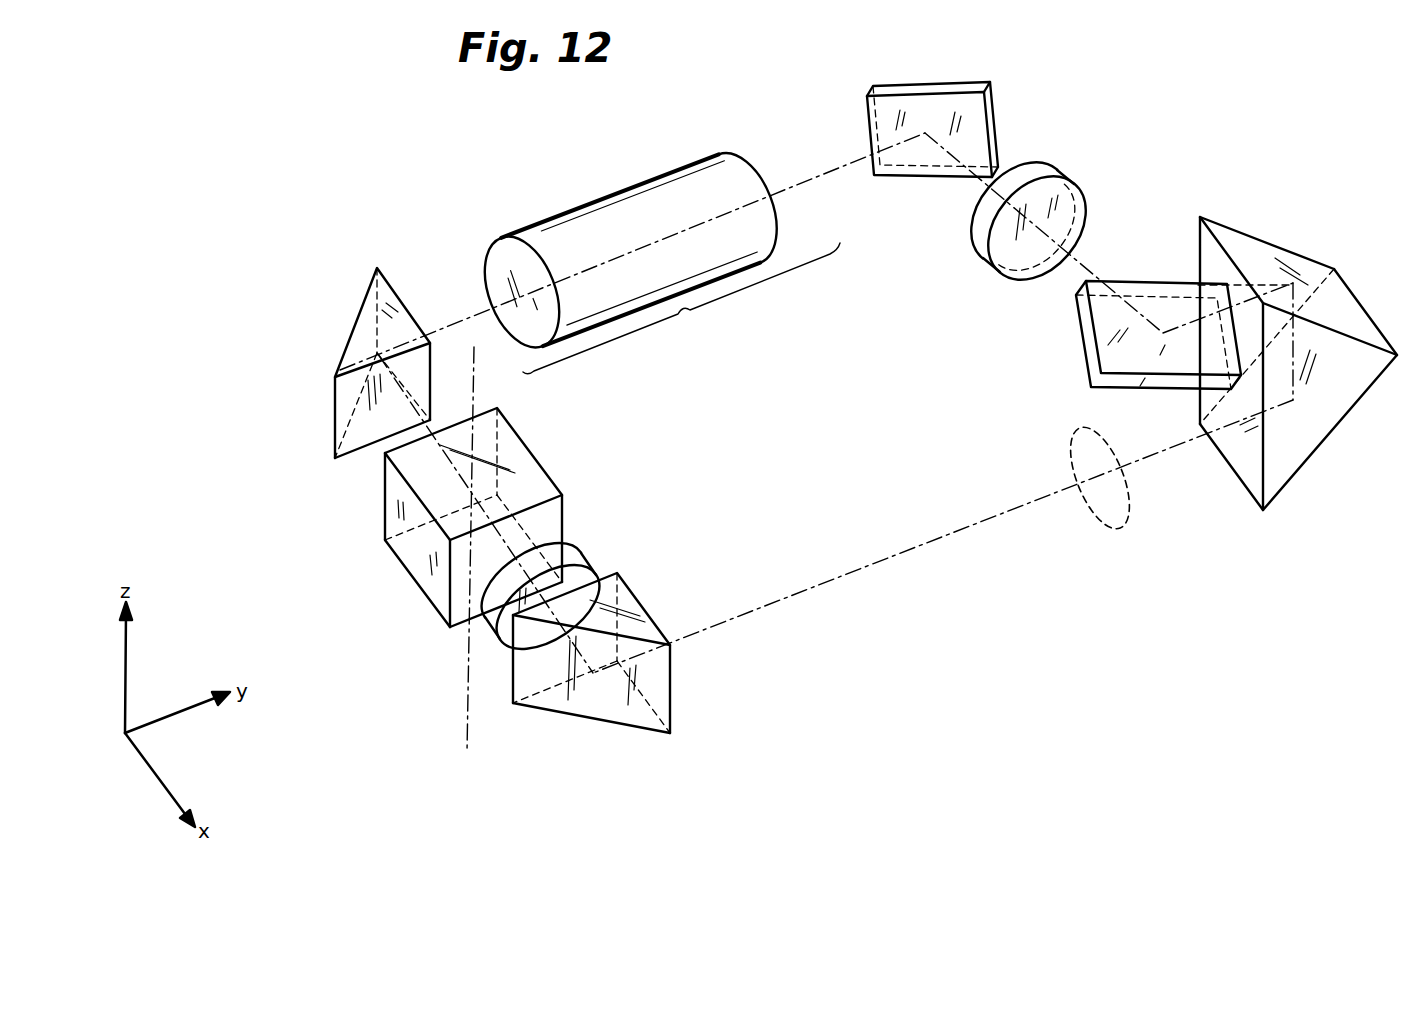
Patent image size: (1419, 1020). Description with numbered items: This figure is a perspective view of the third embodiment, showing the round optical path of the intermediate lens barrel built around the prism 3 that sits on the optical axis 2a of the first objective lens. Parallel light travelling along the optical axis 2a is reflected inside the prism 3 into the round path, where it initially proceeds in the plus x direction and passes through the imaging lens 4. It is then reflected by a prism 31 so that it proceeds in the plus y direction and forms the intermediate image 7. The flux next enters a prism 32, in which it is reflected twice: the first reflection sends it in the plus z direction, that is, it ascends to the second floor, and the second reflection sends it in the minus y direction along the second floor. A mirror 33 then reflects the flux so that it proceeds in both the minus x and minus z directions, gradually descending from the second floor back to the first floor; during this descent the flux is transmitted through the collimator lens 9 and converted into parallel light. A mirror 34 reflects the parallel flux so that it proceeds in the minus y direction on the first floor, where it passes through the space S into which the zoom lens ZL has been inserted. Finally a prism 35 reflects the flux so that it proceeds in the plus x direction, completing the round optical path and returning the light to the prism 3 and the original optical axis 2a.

The prism 35 is at (362, 320).
The zoom lens ZL is at (625, 192).
The space S is at (681, 308).
The mirror 34 is at (917, 153).
The collimator lens 9 is at (1027, 165).
The mirror 33 is at (1088, 345).
The prism 32 is at (1238, 450).
The intermediate image 7 is at (1118, 528).
The prism 3 is at (412, 560).
The imaging lens 4 is at (590, 578).
The prism 31 is at (608, 705).
The optical axis 2a is at (466, 742).